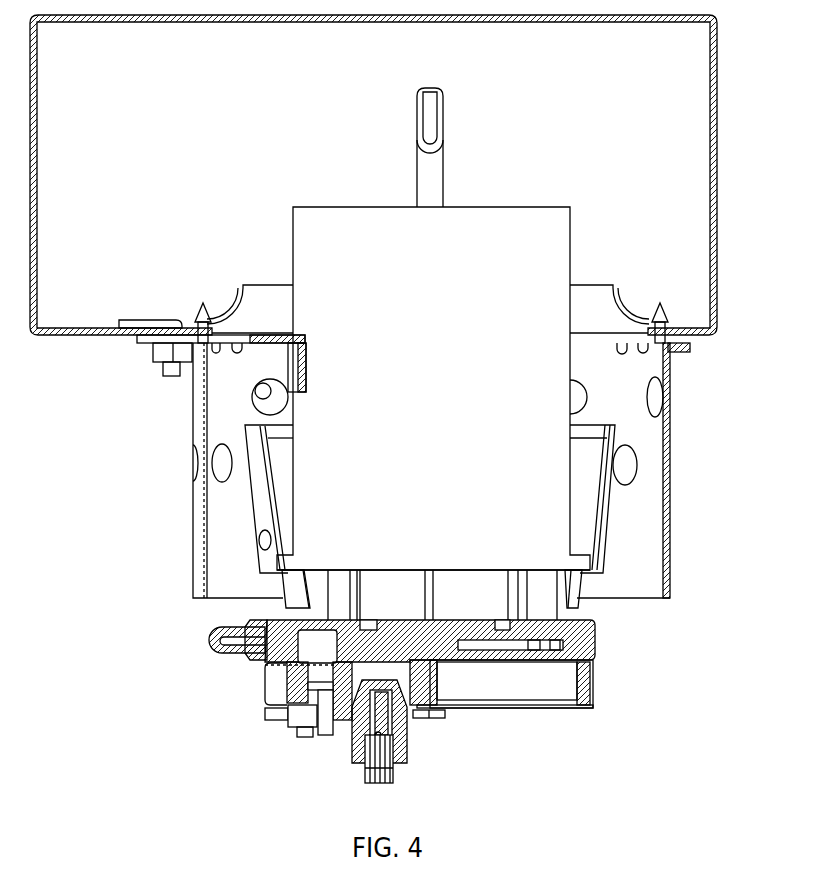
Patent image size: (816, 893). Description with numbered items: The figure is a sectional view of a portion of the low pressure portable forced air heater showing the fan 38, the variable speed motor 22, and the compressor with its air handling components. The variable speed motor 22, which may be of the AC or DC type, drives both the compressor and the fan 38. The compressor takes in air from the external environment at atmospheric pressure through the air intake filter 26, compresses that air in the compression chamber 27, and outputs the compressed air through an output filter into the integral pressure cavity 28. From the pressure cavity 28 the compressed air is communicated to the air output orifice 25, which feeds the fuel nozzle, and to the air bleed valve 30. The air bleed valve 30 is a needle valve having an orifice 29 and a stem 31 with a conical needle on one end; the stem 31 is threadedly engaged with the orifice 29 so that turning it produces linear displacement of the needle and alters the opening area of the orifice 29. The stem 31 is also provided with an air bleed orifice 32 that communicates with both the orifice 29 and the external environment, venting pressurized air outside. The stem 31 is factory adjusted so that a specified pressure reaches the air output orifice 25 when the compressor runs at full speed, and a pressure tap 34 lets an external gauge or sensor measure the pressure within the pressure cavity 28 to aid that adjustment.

The variable speed motor 22 is at (560, 265).
The air output orifice 25 is at (212, 628).
The air intake filter 26 is at (537, 687).
The compression chamber 27 is at (463, 587).
The integral pressure cavity 28 is at (302, 675).
The orifice 29 is at (393, 697).
The air bleed valve 30 is at (325, 777).
The stem 31 is at (397, 772).
The air bleed orifice 32 is at (352, 745).
The pressure tap 34 is at (298, 732).
The fan 38 is at (680, 106).